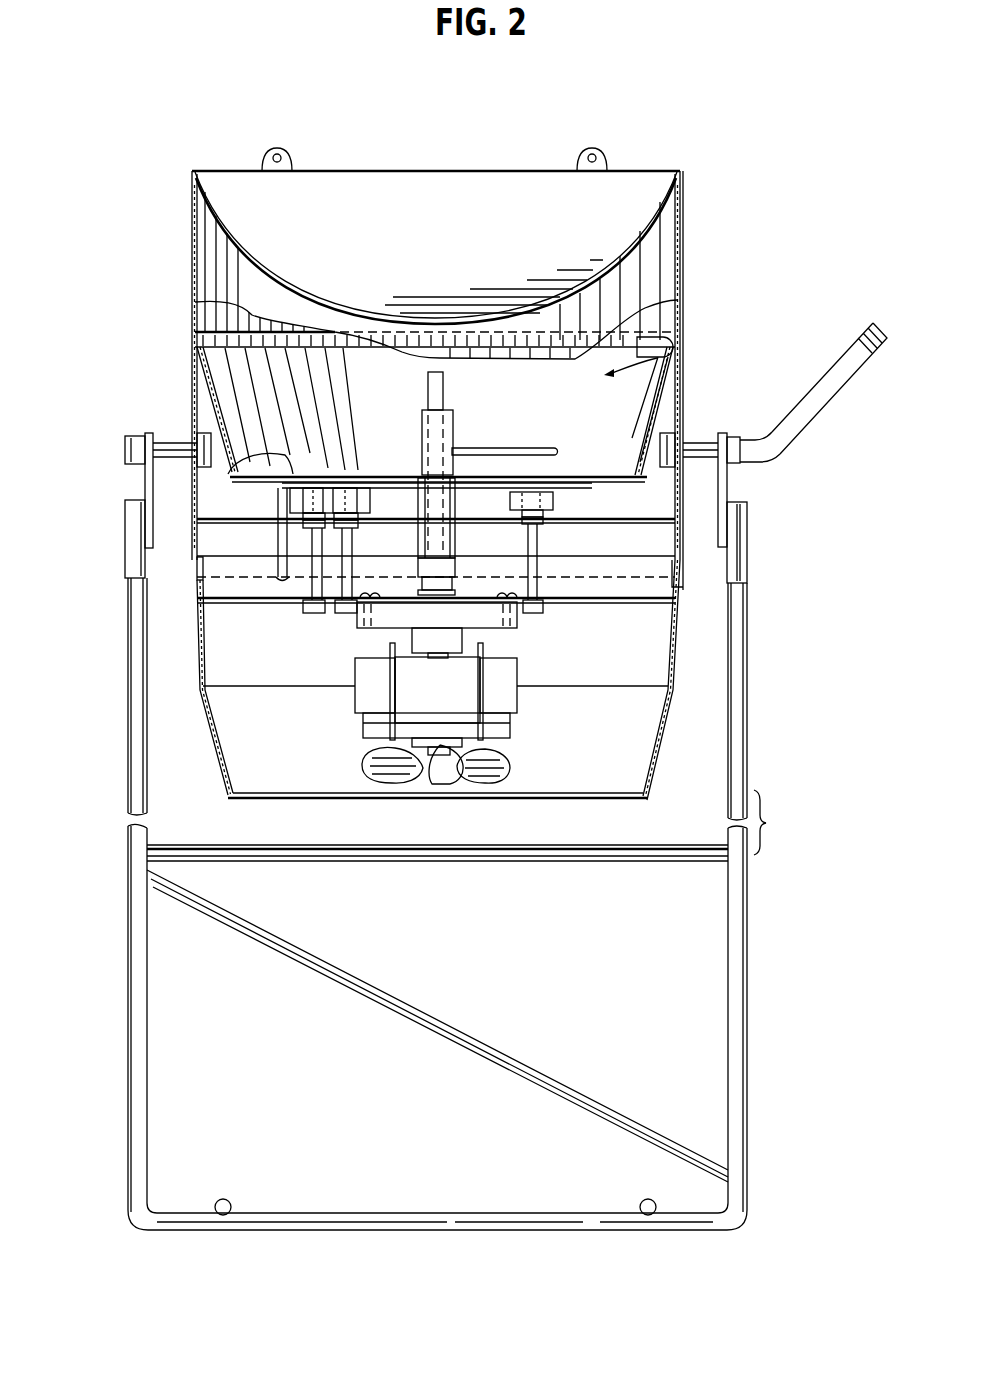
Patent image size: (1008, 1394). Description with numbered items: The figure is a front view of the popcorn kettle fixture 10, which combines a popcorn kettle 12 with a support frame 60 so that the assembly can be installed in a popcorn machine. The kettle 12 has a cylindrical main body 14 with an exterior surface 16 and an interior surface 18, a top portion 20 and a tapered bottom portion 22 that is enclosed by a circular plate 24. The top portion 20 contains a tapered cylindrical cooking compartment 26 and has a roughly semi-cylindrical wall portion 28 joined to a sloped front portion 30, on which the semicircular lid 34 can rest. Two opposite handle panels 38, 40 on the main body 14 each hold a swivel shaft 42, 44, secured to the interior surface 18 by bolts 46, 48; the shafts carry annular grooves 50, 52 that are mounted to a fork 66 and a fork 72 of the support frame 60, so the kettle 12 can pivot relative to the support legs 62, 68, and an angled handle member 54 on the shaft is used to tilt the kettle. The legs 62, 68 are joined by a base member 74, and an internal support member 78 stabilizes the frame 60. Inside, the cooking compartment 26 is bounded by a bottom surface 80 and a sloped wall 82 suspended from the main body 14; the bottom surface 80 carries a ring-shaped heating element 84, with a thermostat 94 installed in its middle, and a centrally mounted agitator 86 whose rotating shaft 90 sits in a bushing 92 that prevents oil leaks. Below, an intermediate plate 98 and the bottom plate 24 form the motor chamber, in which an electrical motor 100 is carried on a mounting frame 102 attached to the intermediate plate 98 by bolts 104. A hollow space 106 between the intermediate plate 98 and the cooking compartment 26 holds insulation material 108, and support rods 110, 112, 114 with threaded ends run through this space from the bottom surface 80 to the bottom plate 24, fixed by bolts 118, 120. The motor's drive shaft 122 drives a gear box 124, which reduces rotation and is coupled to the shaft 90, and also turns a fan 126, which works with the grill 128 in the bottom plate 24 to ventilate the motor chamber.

The popcorn kettle fixture 10 is at (245, 110).
The popcorn kettle 12 is at (188, 214).
The cylindrical main body 14 is at (190, 365).
The exterior surface 16 is at (682, 237).
The interior surface 18 is at (680, 262).
The top portion 20 is at (688, 180).
The tapered bottom portion 22 is at (665, 688).
The circular plate 24 is at (750, 792).
The tapered cylindrical cooking compartment 26 is at (655, 358).
The semi-cylindrical wall portion 28 is at (683, 206).
The sloped front portion 30 is at (212, 247).
The semicircular lid 34 is at (547, 185).
The handle panel 38 is at (195, 530).
The handle panel 40 is at (728, 520).
The swivel shaft 42 is at (124, 446).
The swivel shaft 44 is at (736, 466).
The bolt 46 is at (186, 426).
The bolt 48 is at (747, 555).
The annular groove 50 is at (147, 490).
The annular groove 52 is at (737, 440).
The angled handle member 54 is at (830, 400).
The support frame 60 is at (128, 1105).
The support leg 62 is at (128, 802).
The fork 66 is at (190, 505).
The support leg 68 is at (748, 905).
The fork 72 is at (720, 472).
The base member 74 is at (496, 1220).
The internal support member 78 is at (735, 1128).
The bottom surface 80 is at (228, 610).
The sloped wall 82 is at (675, 332).
The heating element 84 is at (206, 640).
The agitator 86 is at (470, 410).
The rotating shaft 90 is at (421, 425).
The bushing 92 is at (650, 640).
The thermostat 94 is at (640, 615).
The intermediate plate 98 is at (258, 688).
The electrical motor 100 is at (392, 745).
The mounting frame 102 is at (360, 640).
The bolts 104 is at (640, 690).
The hollow space 106 is at (212, 570).
The insulation material 108 is at (660, 580).
The support rod 110 is at (305, 625).
The support rod 112 is at (345, 625).
The support rod 114 is at (672, 718).
The bolt 118 is at (345, 515).
The bolt 120 is at (560, 468).
The drive shaft 122 is at (578, 702).
The gear box 124 is at (455, 790).
The fan 126 is at (403, 790).
The grill 128 is at (518, 862).